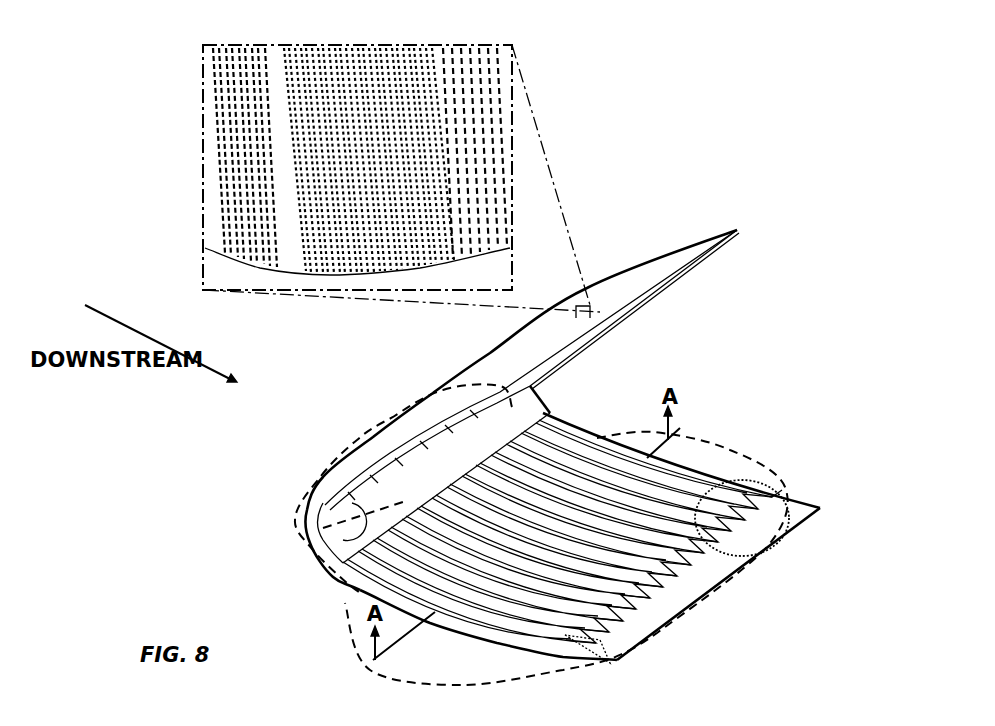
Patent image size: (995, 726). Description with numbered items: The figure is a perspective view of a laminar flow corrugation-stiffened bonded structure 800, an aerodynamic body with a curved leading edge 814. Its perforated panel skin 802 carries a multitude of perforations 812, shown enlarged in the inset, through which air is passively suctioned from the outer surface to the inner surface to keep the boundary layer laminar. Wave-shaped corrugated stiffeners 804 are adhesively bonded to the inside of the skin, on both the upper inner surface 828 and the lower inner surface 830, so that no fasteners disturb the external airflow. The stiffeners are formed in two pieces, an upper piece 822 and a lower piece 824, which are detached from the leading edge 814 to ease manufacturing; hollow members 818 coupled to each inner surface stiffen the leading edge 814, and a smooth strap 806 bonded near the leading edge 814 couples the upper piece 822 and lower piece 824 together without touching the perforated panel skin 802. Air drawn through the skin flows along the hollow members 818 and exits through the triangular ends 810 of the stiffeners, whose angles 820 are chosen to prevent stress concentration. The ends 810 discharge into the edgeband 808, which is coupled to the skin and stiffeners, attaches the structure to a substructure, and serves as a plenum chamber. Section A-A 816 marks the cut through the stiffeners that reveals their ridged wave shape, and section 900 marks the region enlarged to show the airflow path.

The laminar flow corrugation-stiffened bonded structure 800 is at (745, 128).
The perforated panel skin 802 is at (490, 368).
The corrugated stiffeners 804 is at (340, 475).
The strap 806 is at (333, 555).
The edgeband 808 is at (675, 270).
The ends of the corrugated stiffeners 810 is at (745, 527).
The perforations 812 is at (325, 190).
The leading edge 814 is at (310, 540).
The section A-A 816 is at (675, 428).
The hollow members 818 is at (503, 628).
The angles of the ends 820 is at (628, 660).
The upper piece 822 is at (357, 440).
The lower piece 824 is at (633, 432).
The upper inner surface 828 is at (650, 305).
The lower inner surface 830 is at (722, 562).
The section 900 is at (803, 520).